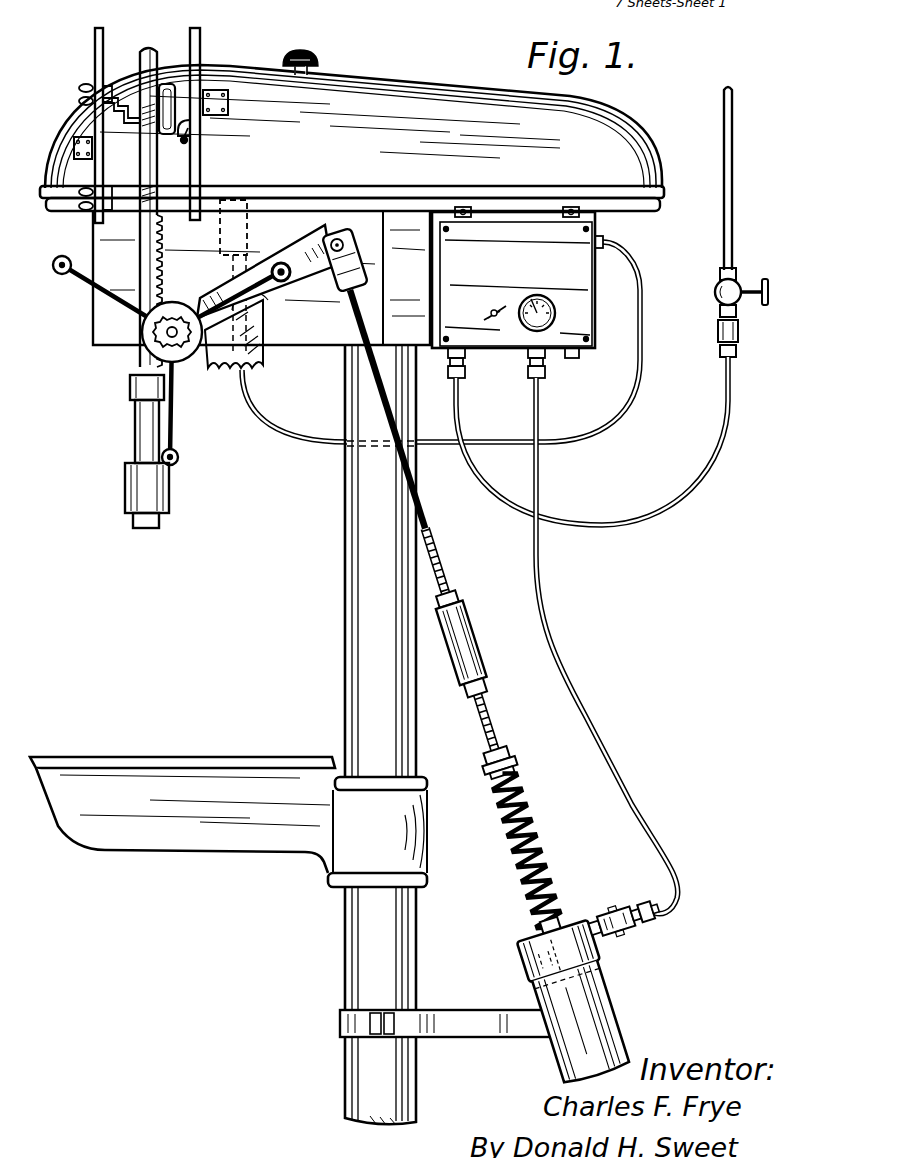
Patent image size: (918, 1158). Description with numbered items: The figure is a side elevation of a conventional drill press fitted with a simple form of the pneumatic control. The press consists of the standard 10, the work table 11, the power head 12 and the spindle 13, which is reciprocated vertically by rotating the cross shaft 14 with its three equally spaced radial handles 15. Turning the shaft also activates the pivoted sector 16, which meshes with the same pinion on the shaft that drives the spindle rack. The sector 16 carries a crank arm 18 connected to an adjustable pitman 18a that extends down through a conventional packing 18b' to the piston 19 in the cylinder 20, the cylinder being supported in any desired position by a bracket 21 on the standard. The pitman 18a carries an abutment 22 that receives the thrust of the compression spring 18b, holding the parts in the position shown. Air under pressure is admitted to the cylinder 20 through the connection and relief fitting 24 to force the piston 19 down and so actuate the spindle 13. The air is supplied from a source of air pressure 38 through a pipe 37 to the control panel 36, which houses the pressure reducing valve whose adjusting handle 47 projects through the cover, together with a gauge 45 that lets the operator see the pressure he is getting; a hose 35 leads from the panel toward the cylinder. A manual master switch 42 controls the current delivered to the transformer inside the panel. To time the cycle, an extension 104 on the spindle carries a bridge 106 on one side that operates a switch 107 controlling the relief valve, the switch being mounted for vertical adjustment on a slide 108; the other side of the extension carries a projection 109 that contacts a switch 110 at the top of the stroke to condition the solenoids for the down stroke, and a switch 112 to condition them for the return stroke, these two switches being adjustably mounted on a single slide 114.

The standard 10 is at (355, 963).
The work table 11 is at (155, 838).
The power head 12 is at (452, 108).
The spindle 13 is at (169, 491).
The cross shaft 14 is at (176, 336).
The radial handles 15 is at (84, 283).
The pivoted sector 16 is at (256, 358).
The crank arm 18 is at (294, 256).
The adjustable pitman 18a is at (432, 546).
The compression spring 18b is at (553, 842).
The packing 18b' is at (576, 896).
The piston 19 is at (586, 968).
The cylinder 20 is at (607, 1027).
The bracket 21 is at (471, 1040).
The abutment 22 is at (508, 756).
The connection and relief fitting 24 is at (622, 912).
The hose to cylinder 35 is at (620, 763).
The control panel 36 is at (582, 267).
The pipe 37 is at (655, 517).
The source of air pressure 38 is at (733, 172).
The manual master switch 42 is at (252, 197).
The gauge 45 is at (547, 330).
The adjusting handle 47 is at (493, 322).
The extension 104 is at (153, 46).
The bridge 106 is at (174, 93).
The switch 107 is at (190, 138).
The slide 108 is at (200, 132).
The projection 109 is at (128, 124).
The switch 110 is at (102, 90).
The switch 112 is at (97, 213).
The slide 114 is at (95, 37).